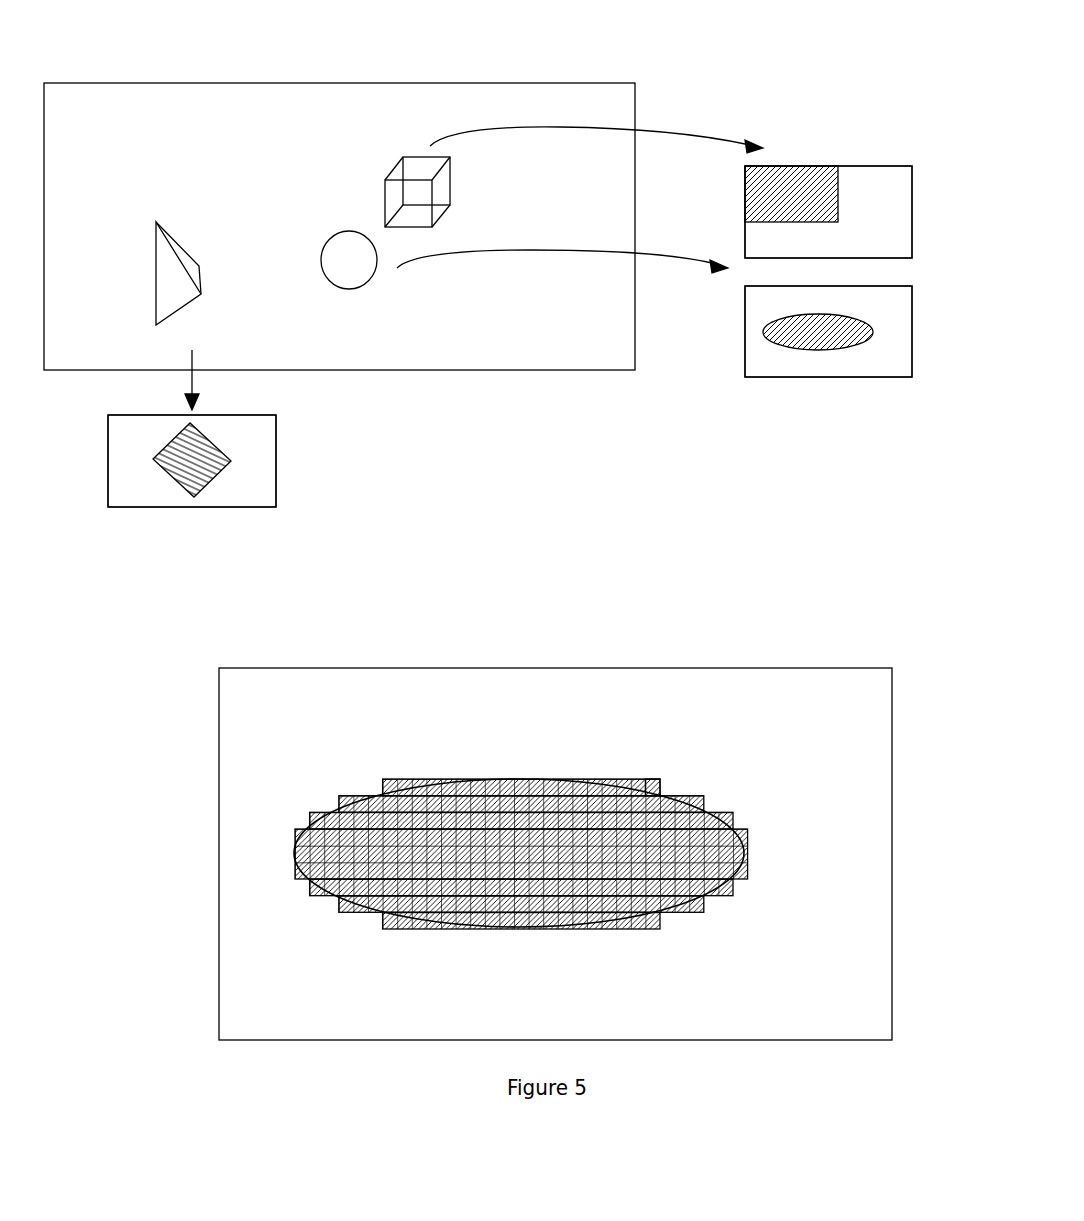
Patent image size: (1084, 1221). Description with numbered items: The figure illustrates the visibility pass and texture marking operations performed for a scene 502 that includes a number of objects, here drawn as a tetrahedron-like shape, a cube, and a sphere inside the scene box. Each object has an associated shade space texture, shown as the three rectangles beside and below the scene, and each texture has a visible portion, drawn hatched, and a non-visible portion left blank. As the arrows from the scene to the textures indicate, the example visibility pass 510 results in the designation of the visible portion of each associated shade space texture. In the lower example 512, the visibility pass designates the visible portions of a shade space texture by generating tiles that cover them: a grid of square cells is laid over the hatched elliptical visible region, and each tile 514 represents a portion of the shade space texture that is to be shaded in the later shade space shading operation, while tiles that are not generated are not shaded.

The scene 502 is at (265, 83).
The visibility pass 510 is at (474, 211).
The example 512 is at (555, 815).
The tile 514 is at (666, 770).